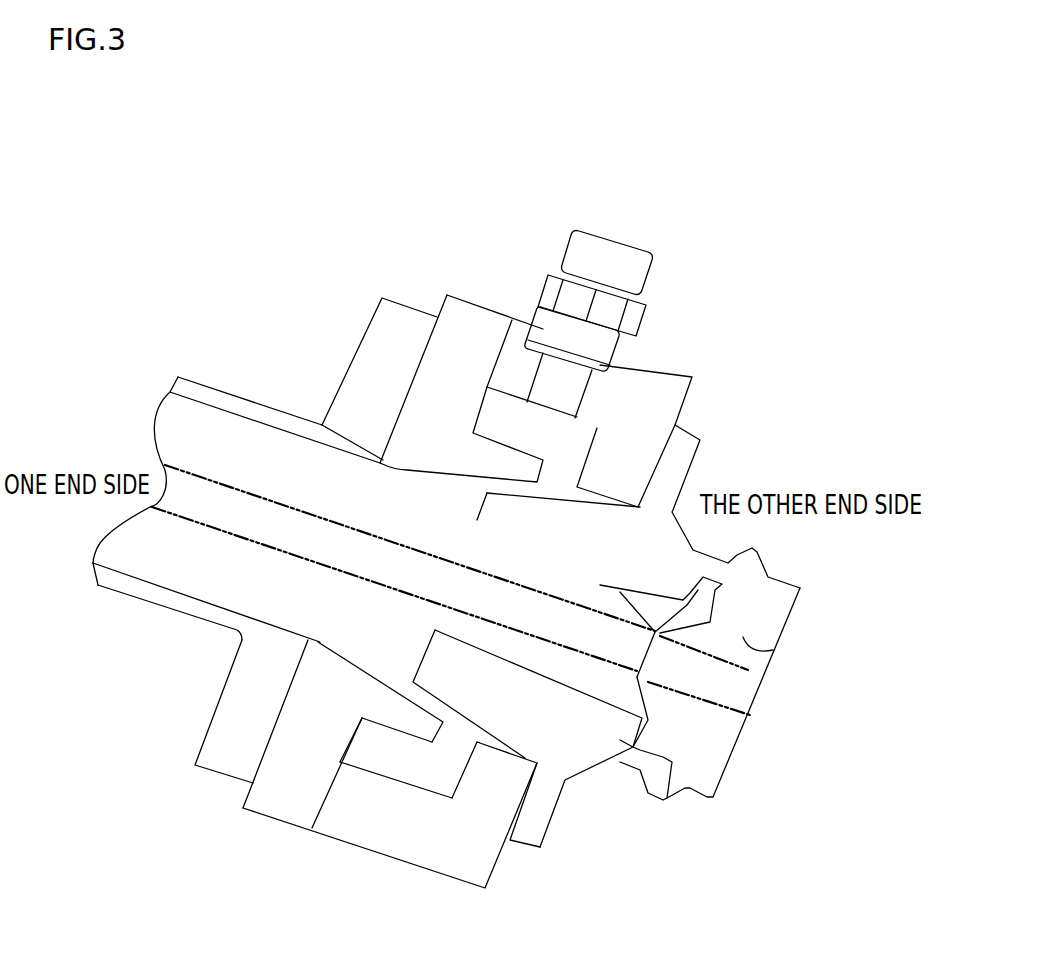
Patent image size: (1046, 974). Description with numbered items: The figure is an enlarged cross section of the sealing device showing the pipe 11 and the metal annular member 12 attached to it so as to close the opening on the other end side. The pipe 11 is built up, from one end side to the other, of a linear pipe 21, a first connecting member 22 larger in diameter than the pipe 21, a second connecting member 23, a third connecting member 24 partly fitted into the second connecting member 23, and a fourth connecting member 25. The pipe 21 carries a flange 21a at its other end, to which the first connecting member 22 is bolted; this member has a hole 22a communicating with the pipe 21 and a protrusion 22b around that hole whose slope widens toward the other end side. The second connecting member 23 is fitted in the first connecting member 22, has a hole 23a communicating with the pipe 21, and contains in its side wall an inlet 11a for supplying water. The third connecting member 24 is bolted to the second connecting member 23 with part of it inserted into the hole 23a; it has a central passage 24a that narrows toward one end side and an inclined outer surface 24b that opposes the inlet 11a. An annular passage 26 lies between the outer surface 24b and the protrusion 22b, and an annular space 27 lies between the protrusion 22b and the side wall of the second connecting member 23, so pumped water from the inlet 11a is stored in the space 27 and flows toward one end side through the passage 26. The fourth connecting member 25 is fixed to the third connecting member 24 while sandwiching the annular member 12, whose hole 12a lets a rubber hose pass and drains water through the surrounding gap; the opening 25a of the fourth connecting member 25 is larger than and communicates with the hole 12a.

The pipe 11 is at (203, 338).
The inlet 11a is at (567, 363).
The annular member 12 is at (660, 707).
The hole 12a is at (658, 658).
The pipe 21 is at (142, 602).
The flange 21a is at (355, 360).
The first connecting member 22 is at (282, 807).
The hole 22a is at (318, 640).
The protrusion 22b is at (420, 722).
The second connecting member 23 is at (378, 840).
The hole 23a is at (503, 748).
The third connecting member 24 is at (588, 760).
The passage 24a is at (560, 568).
The outer surface 24b is at (547, 487).
The fourth connecting member 25 is at (715, 765).
The opening 25a is at (773, 652).
The annular passage 26 is at (427, 700).
The annular space 27 is at (442, 770).